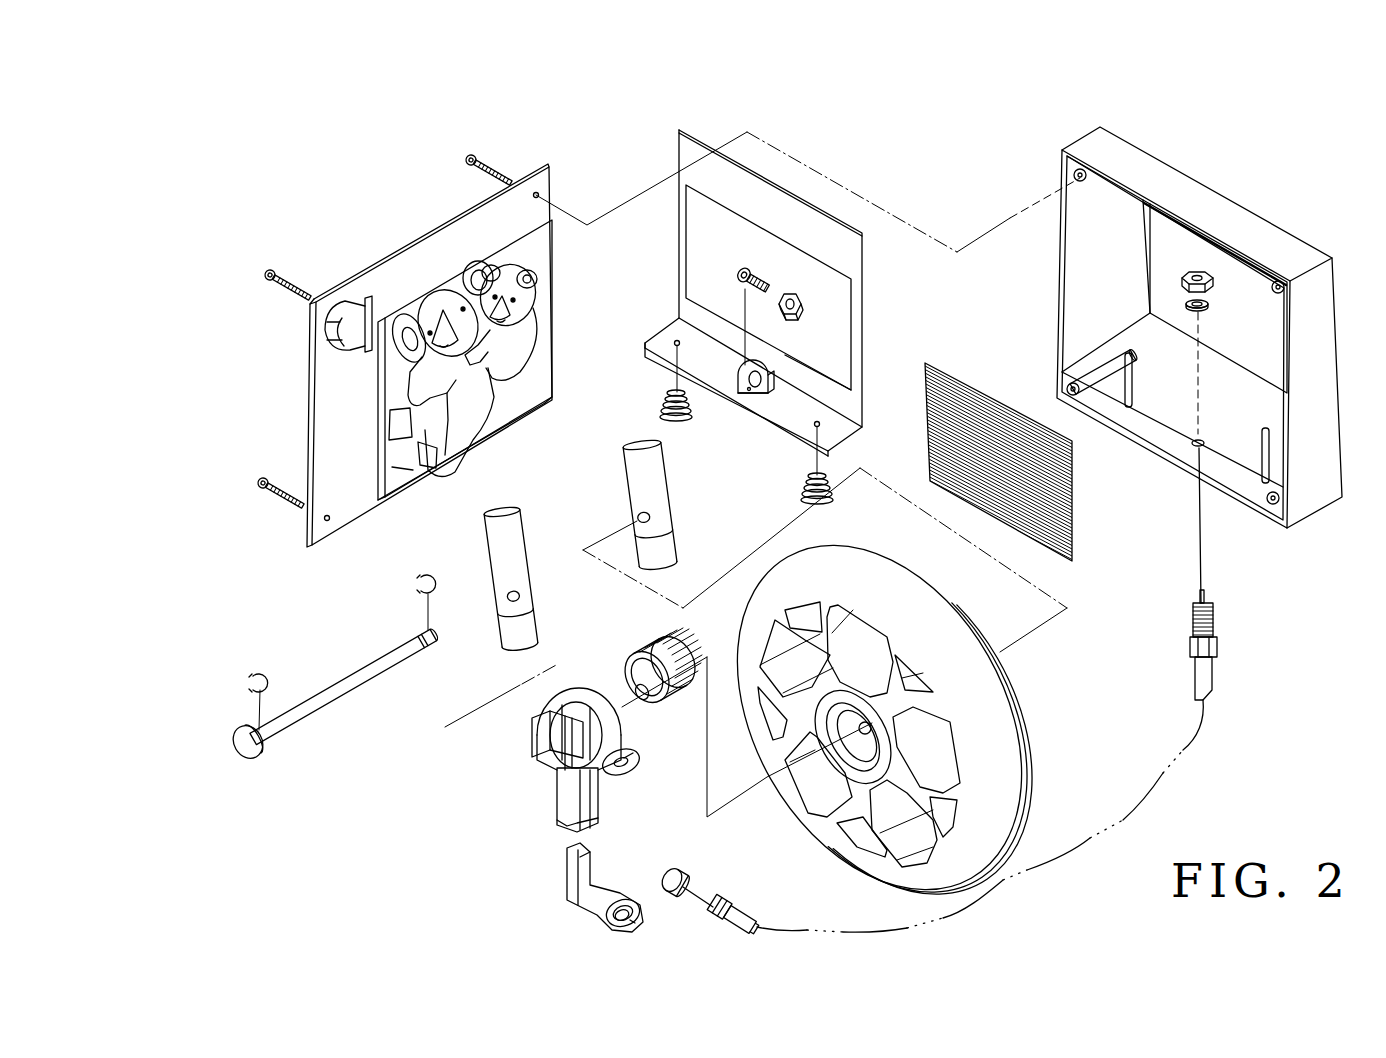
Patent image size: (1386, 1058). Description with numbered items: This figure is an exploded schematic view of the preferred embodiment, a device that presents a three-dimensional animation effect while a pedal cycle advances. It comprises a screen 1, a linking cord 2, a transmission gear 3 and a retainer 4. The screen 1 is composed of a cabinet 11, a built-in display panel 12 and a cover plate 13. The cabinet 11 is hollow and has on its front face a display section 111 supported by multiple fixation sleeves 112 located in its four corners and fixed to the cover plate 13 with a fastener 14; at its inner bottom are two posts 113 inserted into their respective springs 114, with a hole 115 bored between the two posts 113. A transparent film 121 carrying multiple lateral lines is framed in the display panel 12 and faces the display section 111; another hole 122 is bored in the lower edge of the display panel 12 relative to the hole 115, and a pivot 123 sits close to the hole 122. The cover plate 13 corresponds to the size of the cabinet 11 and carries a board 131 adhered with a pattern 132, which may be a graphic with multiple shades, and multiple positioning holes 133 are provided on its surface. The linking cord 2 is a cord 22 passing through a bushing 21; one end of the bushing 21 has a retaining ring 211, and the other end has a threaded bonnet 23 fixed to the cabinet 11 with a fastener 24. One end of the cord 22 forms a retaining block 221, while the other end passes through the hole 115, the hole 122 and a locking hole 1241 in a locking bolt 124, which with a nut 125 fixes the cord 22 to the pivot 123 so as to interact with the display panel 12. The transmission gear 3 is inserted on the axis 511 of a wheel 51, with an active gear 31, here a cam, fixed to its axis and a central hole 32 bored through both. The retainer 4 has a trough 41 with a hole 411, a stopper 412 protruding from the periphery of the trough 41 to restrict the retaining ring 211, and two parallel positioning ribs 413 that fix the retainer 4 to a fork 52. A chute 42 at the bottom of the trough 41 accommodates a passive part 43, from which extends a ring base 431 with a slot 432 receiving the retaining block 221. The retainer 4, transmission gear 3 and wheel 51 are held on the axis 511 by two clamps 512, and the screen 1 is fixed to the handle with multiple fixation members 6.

The screen 1 is at (809, 433).
The cabinet 11 is at (1164, 174).
The display section 111 is at (1171, 237).
The fixation sleeves 112 is at (1090, 378).
The posts 113 is at (1128, 407).
The springs 114 is at (746, 430).
The hole 115 is at (1195, 450).
The display panel 12 is at (735, 184).
The transparent film 121 is at (955, 429).
The hole 122 is at (744, 397).
The pivot 123 is at (742, 361).
The locking bolt 124 is at (758, 277).
The locking hole 1241 is at (745, 271).
The nut 125 is at (792, 289).
The cover plate 13 is at (418, 250).
The board 131 is at (530, 332).
The pattern 132 is at (482, 385).
The positioning holes 133 is at (540, 193).
The fastener 14 is at (384, 329).
The linking cord 2 is at (1203, 673).
The bushing 21 is at (755, 918).
The retaining ring 211 is at (735, 900).
The cord 22 is at (700, 883).
The retaining block 221 is at (676, 868).
The bonnet 23 is at (1190, 614).
The fastener 24 is at (1265, 256).
The transmission gear 3 is at (675, 660).
The active gear 31 is at (650, 660).
The central hole 32 is at (633, 685).
The retainer 4 is at (562, 787).
The trough 41 is at (570, 693).
The hole 411 is at (567, 753).
The stopper 412 is at (638, 758).
The positioning ribs 413 is at (537, 738).
The chute 42 is at (560, 827).
The passive part 43 is at (590, 897).
The ring base 431 is at (613, 927).
The slot 432 is at (627, 897).
The wheel 51 is at (987, 747).
The axis 511 is at (353, 677).
The clamps 512 is at (258, 670).
The fork 52 is at (581, 538).
The fixation members 6 is at (338, 343).